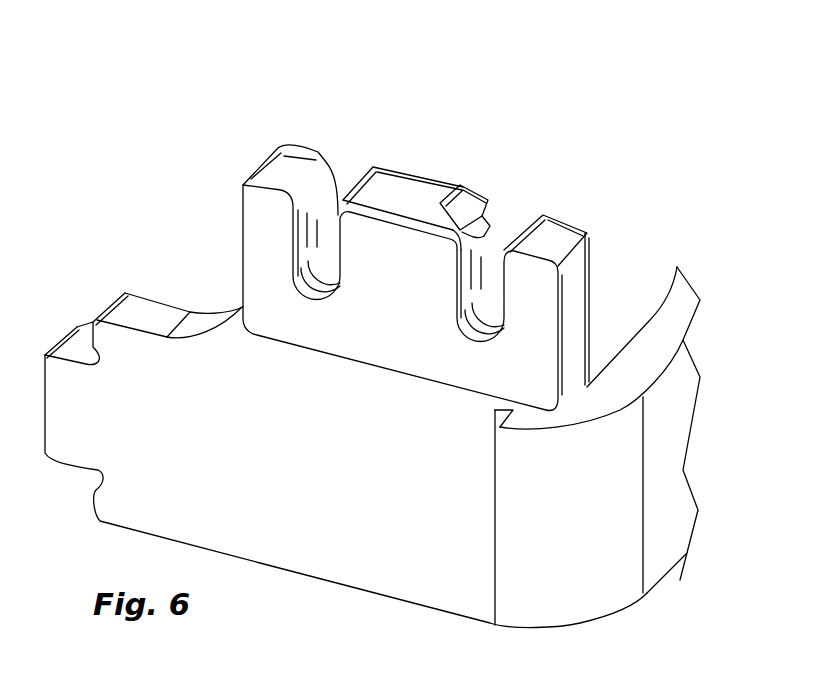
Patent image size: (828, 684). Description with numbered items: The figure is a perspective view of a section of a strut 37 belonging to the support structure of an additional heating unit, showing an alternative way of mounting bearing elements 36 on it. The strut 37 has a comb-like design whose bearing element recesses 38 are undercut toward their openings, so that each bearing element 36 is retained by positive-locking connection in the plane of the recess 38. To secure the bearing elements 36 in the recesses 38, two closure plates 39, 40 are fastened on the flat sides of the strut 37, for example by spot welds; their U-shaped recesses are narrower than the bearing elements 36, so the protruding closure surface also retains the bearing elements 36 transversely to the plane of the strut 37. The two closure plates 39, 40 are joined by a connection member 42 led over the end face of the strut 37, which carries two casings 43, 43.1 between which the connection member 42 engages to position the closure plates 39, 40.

The bearing element 36 is at (487, 231).
The strut 37 is at (387, 496).
The bearing element recess 38 is at (482, 213).
The closure plate 39 is at (592, 308).
The closure plate 40 is at (407, 321).
The connection member 42 is at (414, 190).
The casing 43 is at (377, 168).
The casing 43.1 is at (463, 186).